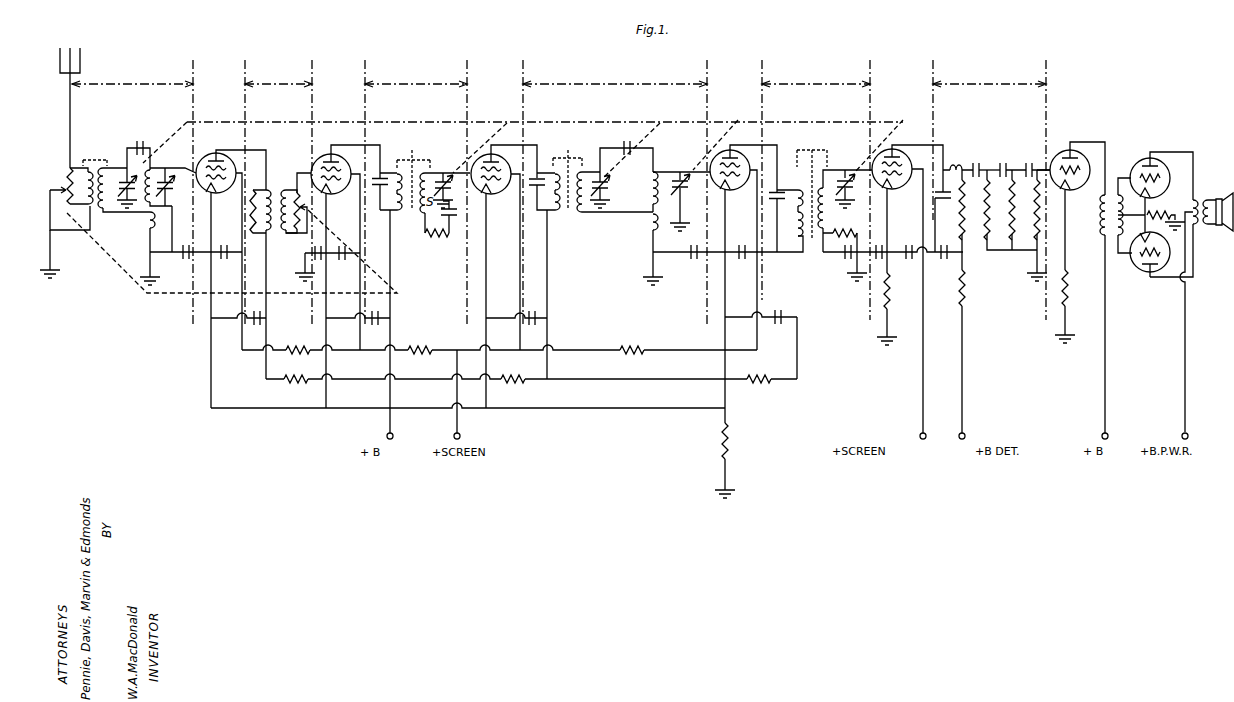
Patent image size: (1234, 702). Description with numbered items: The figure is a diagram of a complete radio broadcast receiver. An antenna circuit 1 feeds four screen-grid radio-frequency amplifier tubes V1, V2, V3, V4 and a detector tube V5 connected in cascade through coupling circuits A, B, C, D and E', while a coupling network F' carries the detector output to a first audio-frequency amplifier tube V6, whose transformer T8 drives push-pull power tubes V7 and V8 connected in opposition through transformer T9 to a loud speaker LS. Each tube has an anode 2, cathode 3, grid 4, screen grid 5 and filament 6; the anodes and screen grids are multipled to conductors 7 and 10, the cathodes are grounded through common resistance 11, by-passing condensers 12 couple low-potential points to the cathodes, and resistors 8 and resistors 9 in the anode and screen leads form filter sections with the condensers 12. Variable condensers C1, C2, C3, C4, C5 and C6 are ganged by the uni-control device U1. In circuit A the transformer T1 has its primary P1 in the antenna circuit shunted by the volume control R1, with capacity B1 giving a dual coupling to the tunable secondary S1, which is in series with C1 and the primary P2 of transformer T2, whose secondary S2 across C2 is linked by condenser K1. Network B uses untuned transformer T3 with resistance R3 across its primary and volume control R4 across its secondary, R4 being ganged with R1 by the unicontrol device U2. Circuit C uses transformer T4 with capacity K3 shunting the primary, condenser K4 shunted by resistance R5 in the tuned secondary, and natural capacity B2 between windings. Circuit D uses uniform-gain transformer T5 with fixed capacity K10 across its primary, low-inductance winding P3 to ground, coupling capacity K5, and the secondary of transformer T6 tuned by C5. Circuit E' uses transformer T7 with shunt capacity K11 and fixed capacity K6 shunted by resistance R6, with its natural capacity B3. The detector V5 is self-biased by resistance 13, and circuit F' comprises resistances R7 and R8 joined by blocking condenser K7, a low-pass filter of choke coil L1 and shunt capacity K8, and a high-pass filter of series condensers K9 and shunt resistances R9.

The antenna circuit 1 is at (60, 85).
The anode 2 is at (223, 153).
The cathode 3 is at (223, 196).
The grid 4 is at (187, 163).
The screen grid 5 is at (244, 162).
The filament 6 is at (215, 200).
The conductor 7 is at (396, 424).
The resistors 8 is at (531, 360).
The resistors 9 is at (499, 339).
The conductor 10 is at (499, 425).
The common resistance 11 is at (742, 453).
The by-passing condensers 12 is at (536, 265).
The resistance 13 is at (893, 309).
The coupling circuit A is at (132, 88).
The coupling network B is at (278, 88).
The coupling circuit C is at (416, 88).
The double-tuned circuit D is at (615, 88).
The coupling circuit E' is at (816, 88).
The coupling network F' is at (989, 88).
The uni-control device U1 is at (336, 122).
The unicontrol device U2 is at (172, 298).
The variable resistance R1 is at (59, 186).
The resistance R3 is at (256, 225).
The variable resistance R4 is at (294, 182).
The resistance R5 is at (437, 241).
The resistance R6 is at (845, 232).
The resistance R7 is at (952, 301).
The resistance R8 is at (1010, 210).
The shunt resistances R9 is at (1031, 217).
The variable condenser C1 is at (123, 188).
The variable condenser C2 is at (165, 210).
The variable condenser C3 is at (440, 189).
The variable capacity C4 is at (611, 190).
The variable condenser C5 is at (684, 201).
The tuning condenser C6 is at (851, 189).
The condenser K1 is at (141, 148).
The capacity K3 is at (376, 195).
The condenser K4 is at (453, 215).
The capacity K5 is at (626, 151).
The fixed capacity K6 is at (845, 258).
The blocking condenser K7 is at (986, 160).
The shunt capacity K8 is at (939, 211).
The series condensers K9 is at (1005, 168).
The fixed capacity K10 is at (538, 194).
The shunt capacity K11 is at (780, 221).
The radio-frequency choke coil L1 is at (958, 159).
The transformer T1 is at (110, 199).
The transformer T2 is at (148, 210).
The untuned transformer T3 is at (281, 273).
The coupling transformer T4 is at (433, 219).
The uniform gain transformer T5 is at (604, 215).
The radio frequency transformer T6 is at (665, 212).
The uniform gain transformer T7 is at (824, 217).
The transformer T8 is at (1142, 305).
The transformer T9 is at (1183, 304).
The primary winding P1 is at (305, 183).
The primary winding P2 is at (360, 230).
The low inductance primary winding P3 is at (648, 229).
The secondary winding S1 is at (362, 233).
The secondary winding S2 is at (429, 181).
The capacity B1 is at (95, 150).
The natural capacity B2 is at (414, 175).
The coupling link B3 is at (567, 174).
The thermionic tube V1 is at (213, 155).
The thermionic tube V2 is at (331, 187).
The thermionic tube V3 is at (491, 191).
The thermionic tube V4 is at (730, 185).
The detector tube V5 is at (892, 187).
The audio-frequency amplifier tube V6 is at (1061, 155).
The power tube V7 is at (1146, 158).
The power tube V8 is at (1148, 277).
The loud speaker LS is at (1220, 228).